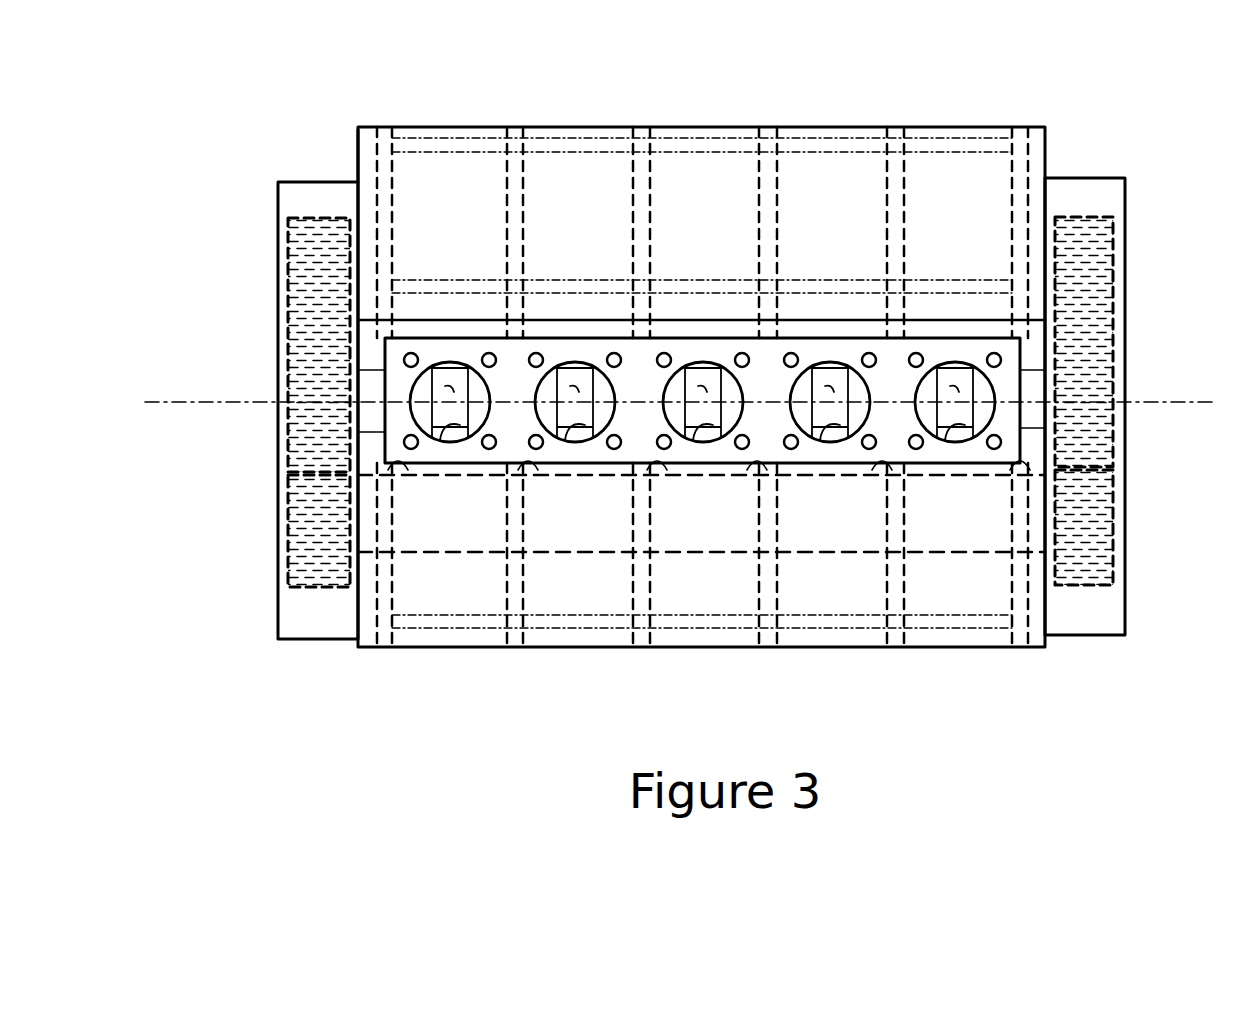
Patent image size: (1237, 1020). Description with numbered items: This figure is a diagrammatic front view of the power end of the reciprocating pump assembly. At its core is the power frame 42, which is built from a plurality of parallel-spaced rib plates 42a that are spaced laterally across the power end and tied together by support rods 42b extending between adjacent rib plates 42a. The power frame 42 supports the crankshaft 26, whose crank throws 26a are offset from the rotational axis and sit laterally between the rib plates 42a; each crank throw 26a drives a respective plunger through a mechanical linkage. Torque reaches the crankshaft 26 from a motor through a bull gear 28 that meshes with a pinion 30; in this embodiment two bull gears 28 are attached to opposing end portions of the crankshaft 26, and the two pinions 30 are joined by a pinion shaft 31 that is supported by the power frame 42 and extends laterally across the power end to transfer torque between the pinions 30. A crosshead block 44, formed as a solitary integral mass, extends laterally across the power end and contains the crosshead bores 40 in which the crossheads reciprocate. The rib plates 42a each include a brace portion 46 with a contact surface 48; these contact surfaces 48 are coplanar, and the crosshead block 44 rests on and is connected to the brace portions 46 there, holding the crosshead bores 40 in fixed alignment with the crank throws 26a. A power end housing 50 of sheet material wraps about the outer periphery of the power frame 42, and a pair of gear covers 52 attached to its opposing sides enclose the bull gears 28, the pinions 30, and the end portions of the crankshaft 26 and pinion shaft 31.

The crankshaft 26 is at (1036, 362).
The crank throws 26a is at (452, 388).
The bull gear 28 is at (310, 270).
The pinion 30 is at (304, 512).
The pinion shaft 31 is at (806, 512).
The crosshead bores 40 is at (530, 411).
The power frame 42 is at (1032, 170).
The rib plates 42a is at (396, 146).
The support rods 42b is at (580, 148).
The crosshead block 44 is at (850, 340).
The brace portion 46 is at (390, 624).
The contact surface 48 is at (399, 466).
The power end housing 50 is at (357, 157).
The gear covers 52 is at (279, 625).